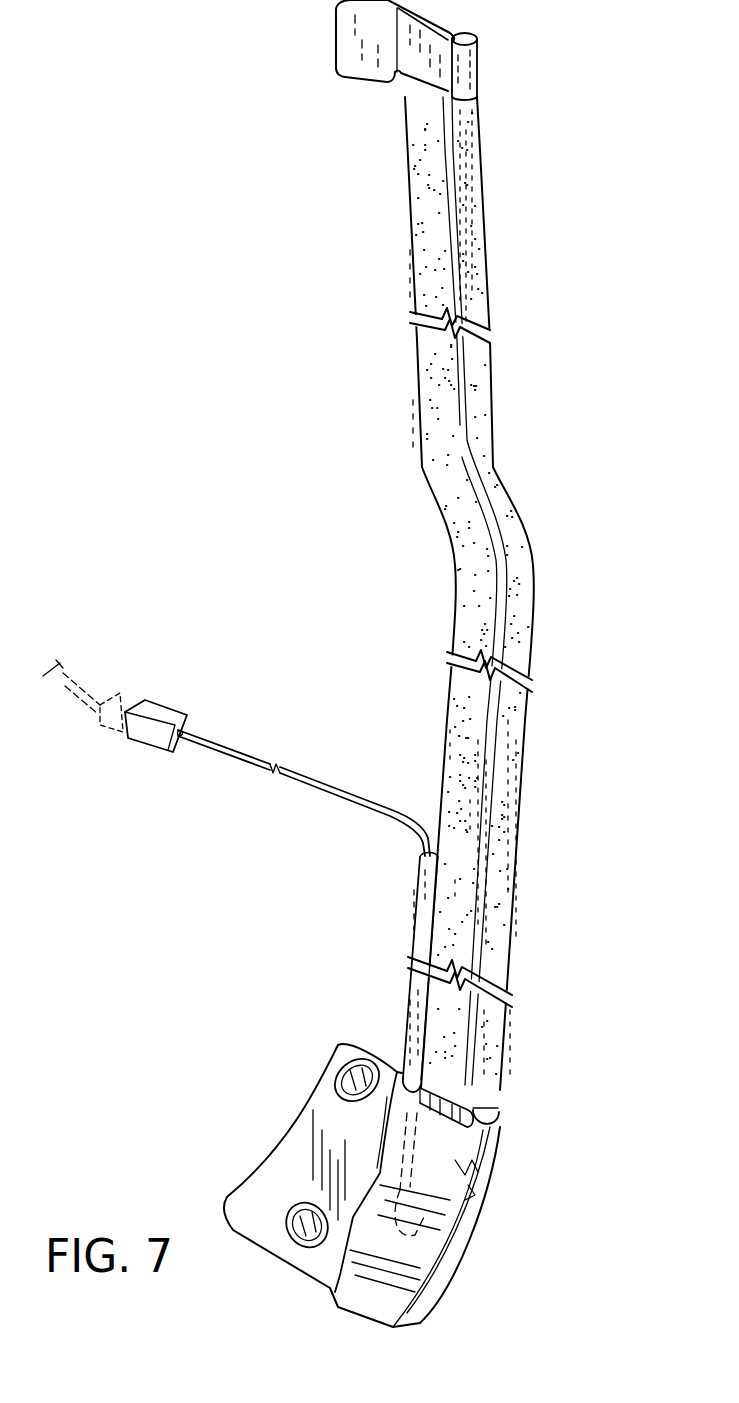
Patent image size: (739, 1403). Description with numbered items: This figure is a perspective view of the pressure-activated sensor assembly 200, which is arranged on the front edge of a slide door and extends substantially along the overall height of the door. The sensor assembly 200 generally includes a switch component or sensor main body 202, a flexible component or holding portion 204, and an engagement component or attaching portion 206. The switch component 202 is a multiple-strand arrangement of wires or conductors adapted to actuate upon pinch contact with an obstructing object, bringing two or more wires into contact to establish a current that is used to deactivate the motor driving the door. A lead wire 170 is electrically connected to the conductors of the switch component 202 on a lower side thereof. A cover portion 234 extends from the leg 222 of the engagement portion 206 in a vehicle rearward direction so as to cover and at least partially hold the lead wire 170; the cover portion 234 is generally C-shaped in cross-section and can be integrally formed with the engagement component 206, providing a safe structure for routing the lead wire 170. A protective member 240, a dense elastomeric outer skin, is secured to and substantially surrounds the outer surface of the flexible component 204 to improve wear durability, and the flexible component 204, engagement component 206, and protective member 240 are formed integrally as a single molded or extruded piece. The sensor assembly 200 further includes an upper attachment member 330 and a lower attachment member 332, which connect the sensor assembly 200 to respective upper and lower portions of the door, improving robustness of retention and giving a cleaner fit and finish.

The lead wire 170 is at (313, 787).
The pressure-activated sensor assembly 200 is at (466, 580).
The switch component 202 is at (473, 143).
The flexible component 204 is at (463, 379).
The engagement component 206 is at (422, 449).
The leg 222 is at (457, 772).
The cover portion 234 is at (415, 923).
The protective member 240 is at (527, 732).
The upper attachment member 330 is at (360, 62).
The lower attachment member 332 is at (295, 1158).